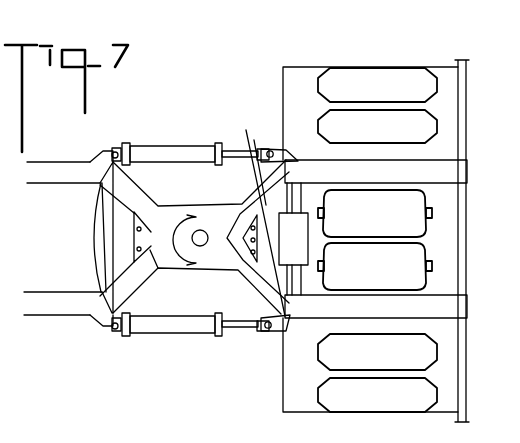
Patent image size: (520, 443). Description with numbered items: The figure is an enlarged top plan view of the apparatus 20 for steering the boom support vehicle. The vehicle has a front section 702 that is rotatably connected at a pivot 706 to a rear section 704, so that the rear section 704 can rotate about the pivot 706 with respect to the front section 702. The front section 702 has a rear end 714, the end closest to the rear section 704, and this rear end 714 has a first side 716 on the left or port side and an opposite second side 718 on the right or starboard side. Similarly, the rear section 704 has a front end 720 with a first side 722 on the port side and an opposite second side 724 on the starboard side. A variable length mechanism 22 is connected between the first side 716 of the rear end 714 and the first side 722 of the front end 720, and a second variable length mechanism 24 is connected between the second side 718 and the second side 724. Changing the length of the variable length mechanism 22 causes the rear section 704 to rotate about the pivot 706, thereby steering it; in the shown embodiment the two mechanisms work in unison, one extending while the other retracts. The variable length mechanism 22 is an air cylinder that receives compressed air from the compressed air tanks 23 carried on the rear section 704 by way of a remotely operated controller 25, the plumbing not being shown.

The apparatus for steering boom support vehicle 20 is at (205, 110).
The variable length mechanism 22 is at (183, 323).
The compressed air tanks 23 is at (413, 260).
The second variable length mechanism 24 is at (162, 155).
The remotely operated controller 25 is at (304, 216).
The front section 702 is at (62, 175).
The rear section 704 is at (302, 93).
The pivot 706 is at (202, 230).
The rear end 714 is at (96, 240).
The first side 716 is at (106, 334).
The second side 718 is at (112, 150).
The front end 720 is at (256, 213).
The first side 722 is at (268, 331).
The second side 724 is at (278, 150).